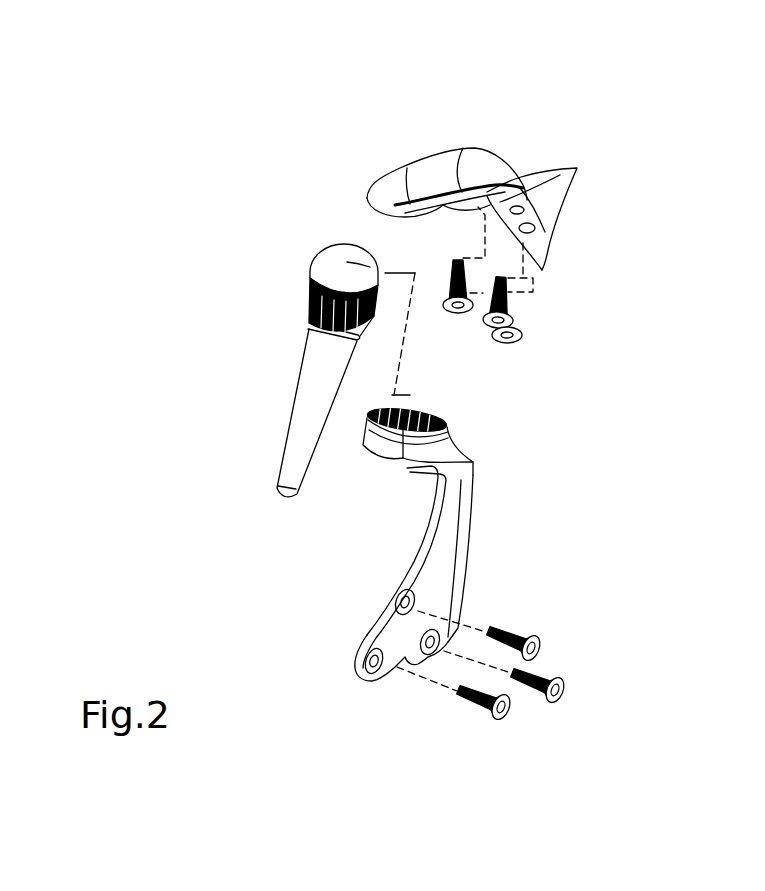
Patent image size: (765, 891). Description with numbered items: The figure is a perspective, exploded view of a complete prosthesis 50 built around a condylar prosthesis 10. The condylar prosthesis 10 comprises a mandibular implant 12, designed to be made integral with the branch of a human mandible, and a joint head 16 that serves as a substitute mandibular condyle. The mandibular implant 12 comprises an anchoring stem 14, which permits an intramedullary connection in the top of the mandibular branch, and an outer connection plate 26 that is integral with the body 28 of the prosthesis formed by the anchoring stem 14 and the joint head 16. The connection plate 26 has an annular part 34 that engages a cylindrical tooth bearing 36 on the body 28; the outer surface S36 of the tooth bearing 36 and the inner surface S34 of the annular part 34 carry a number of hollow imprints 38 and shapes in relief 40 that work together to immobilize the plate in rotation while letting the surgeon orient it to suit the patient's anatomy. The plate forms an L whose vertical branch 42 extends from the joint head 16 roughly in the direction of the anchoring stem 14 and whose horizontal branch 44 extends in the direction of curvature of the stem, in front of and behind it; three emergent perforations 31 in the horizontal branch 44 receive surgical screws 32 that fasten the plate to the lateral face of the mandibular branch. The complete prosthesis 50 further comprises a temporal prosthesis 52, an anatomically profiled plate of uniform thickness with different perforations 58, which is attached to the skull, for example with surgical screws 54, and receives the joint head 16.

The condylar prosthesis 10 is at (237, 554).
The mandibular implant 12 is at (285, 447).
The anchoring stem 14 is at (290, 470).
The joint head 16 is at (321, 256).
The outer connection plate 26 is at (465, 518).
The body of the prosthesis 28 is at (306, 383).
The emergent perforations 31 is at (383, 657).
The surgical screws 32 is at (511, 709).
The annular part 34 is at (450, 424).
The inner surface of the annular part S34 is at (430, 410).
The cylindrical tooth bearing 36 is at (307, 288).
The outer surface of the cylindrical tooth bearing S36 is at (310, 310).
The hollow imprint 38 is at (378, 406).
The shape in relief 40 is at (395, 292).
The vertical branch of the L 42 is at (450, 550).
The horizontal branch of the L 44 is at (392, 630).
The complete prosthesis 50 is at (312, 160).
The temporal prosthesis 52 is at (494, 157).
The surgical screws 54 is at (510, 325).
The perforations 58 is at (578, 170).